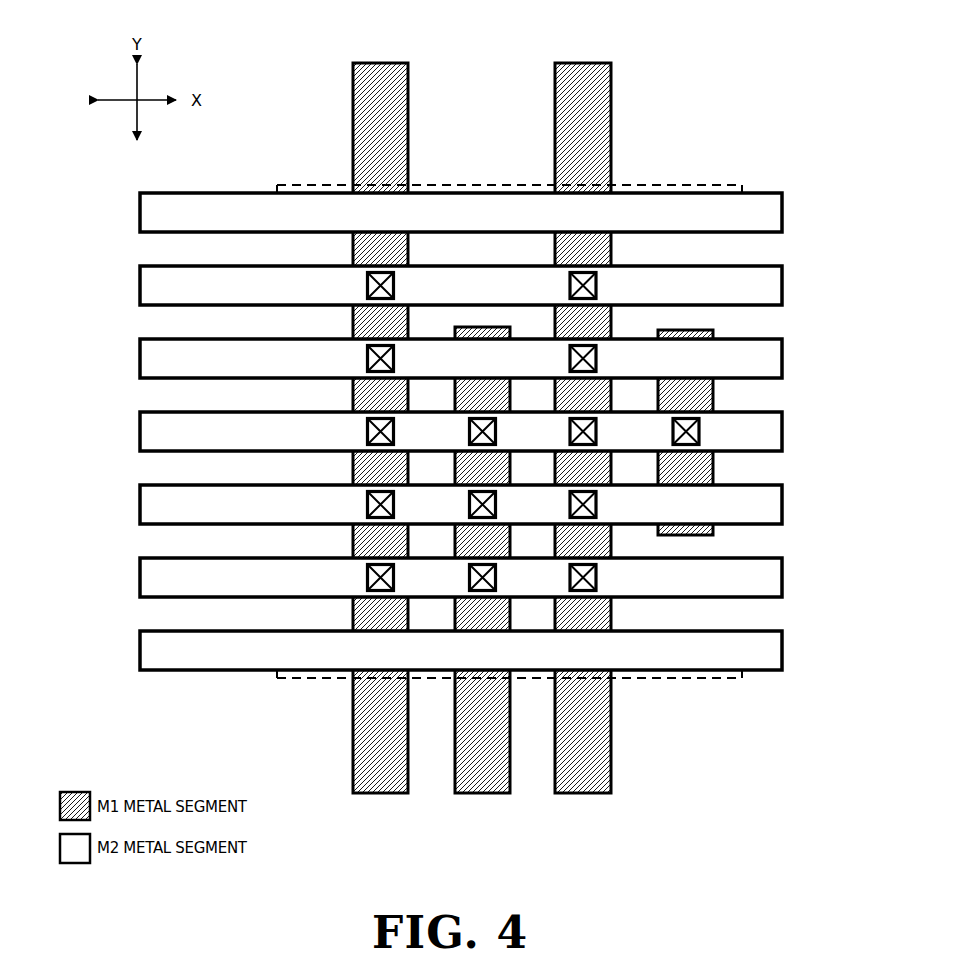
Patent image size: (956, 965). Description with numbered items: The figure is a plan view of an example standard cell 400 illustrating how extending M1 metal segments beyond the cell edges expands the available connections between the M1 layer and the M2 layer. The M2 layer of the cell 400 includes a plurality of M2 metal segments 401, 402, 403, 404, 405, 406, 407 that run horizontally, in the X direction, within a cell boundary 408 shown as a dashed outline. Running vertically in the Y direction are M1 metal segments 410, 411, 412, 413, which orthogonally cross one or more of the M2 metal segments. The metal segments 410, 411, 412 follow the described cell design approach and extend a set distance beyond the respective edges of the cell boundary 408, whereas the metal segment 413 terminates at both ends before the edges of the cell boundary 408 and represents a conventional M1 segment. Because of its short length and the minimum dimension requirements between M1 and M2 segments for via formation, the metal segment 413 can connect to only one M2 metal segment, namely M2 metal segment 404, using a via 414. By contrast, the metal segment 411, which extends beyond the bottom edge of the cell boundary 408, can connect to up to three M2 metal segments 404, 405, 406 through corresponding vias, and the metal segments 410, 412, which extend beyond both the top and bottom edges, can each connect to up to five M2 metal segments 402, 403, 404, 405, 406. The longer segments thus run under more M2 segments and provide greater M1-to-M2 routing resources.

The standard cell 400 is at (721, 91).
The M2 metal segment 401 is at (782, 213).
The M2 metal segment 402 is at (782, 286).
The M2 metal segment 403 is at (782, 359).
The M2 metal segment 404 is at (782, 432).
The M2 metal segment 405 is at (782, 505).
The M2 metal segment 406 is at (782, 578).
The M2 metal segment 407 is at (782, 651).
The cell boundary 408 is at (492, 183).
The metal segment 410 is at (380, 63).
The metal segment 411 is at (480, 793).
The metal segment 412 is at (582, 63).
The metal segment 413 is at (713, 399).
The via 414 is at (700, 434).